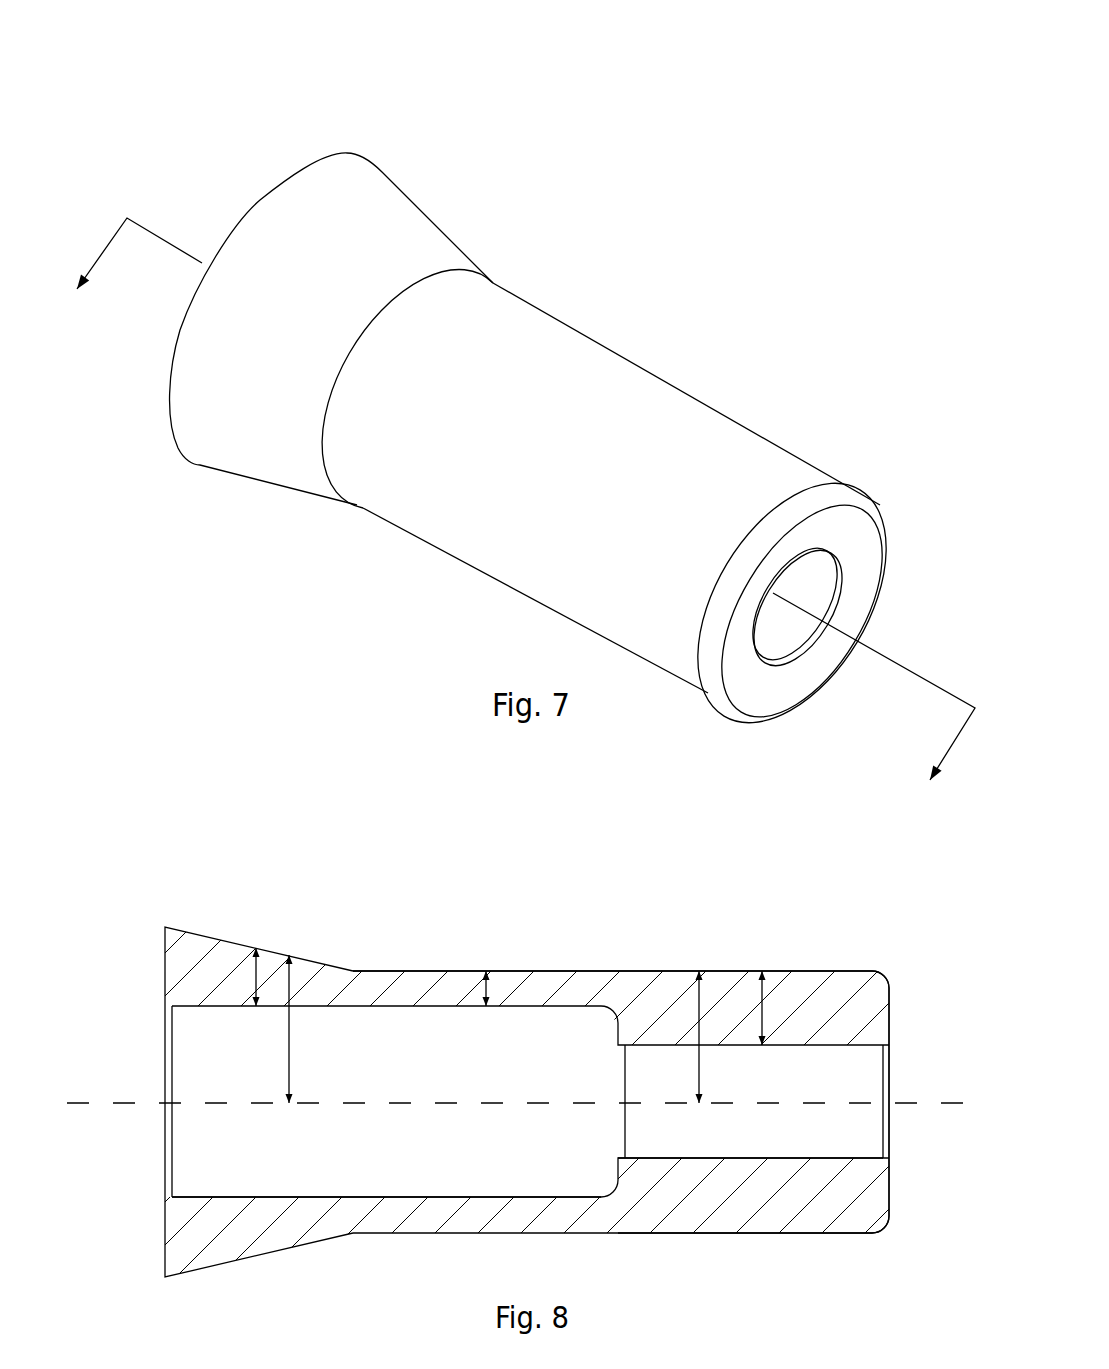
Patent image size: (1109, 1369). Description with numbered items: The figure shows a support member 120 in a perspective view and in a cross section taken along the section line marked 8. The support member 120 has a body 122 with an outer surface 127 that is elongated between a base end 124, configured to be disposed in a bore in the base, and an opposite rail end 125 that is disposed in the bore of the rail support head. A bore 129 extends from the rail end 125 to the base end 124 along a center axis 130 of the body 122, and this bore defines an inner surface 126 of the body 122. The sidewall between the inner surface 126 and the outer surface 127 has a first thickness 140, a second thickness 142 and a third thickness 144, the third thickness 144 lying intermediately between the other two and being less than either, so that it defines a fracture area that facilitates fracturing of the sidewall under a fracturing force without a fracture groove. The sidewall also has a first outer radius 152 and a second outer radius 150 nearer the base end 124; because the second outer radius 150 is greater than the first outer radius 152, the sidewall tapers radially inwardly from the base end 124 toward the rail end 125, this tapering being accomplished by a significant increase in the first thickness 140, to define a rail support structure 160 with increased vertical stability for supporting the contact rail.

In FIG. 7, the section line 8- 8 is at (522, 509).
In FIG. 7, the support member 120 is at (590, 165).
In FIG. 8, the support member 120 is at (218, 827).
In FIG. 7, the body 122 is at (622, 382).
In FIG. 8, the body 122 is at (450, 990).
In FIG. 7, the base end 124 is at (352, 152).
In FIG. 8, the base end 124 is at (165, 923).
In FIG. 7, the rail end 125 is at (847, 527).
In FIG. 8, the rail end 125 is at (878, 987).
In FIG. 8, the inner surface 126 is at (440, 1197).
In FIG. 7, the outer surface 127 is at (740, 422).
In FIG. 8, the outer surface 127 is at (633, 980).
In FIG. 7, the bore 129 is at (823, 583).
In FIG. 8, the bore 129 is at (407, 1094).
In FIG. 8, the center axis 130 is at (940, 1100).
In FIG. 8, the first thickness 140 is at (764, 1008).
In FIG. 8, the second thickness 142 is at (258, 962).
In FIG. 8, the third thickness 144 is at (490, 994).
In FIG. 8, the second outer radius 150 is at (292, 1036).
In FIG. 8, the first outer radius 152 is at (700, 1068).
In FIG. 8, the rail support structure 160 is at (825, 1183).